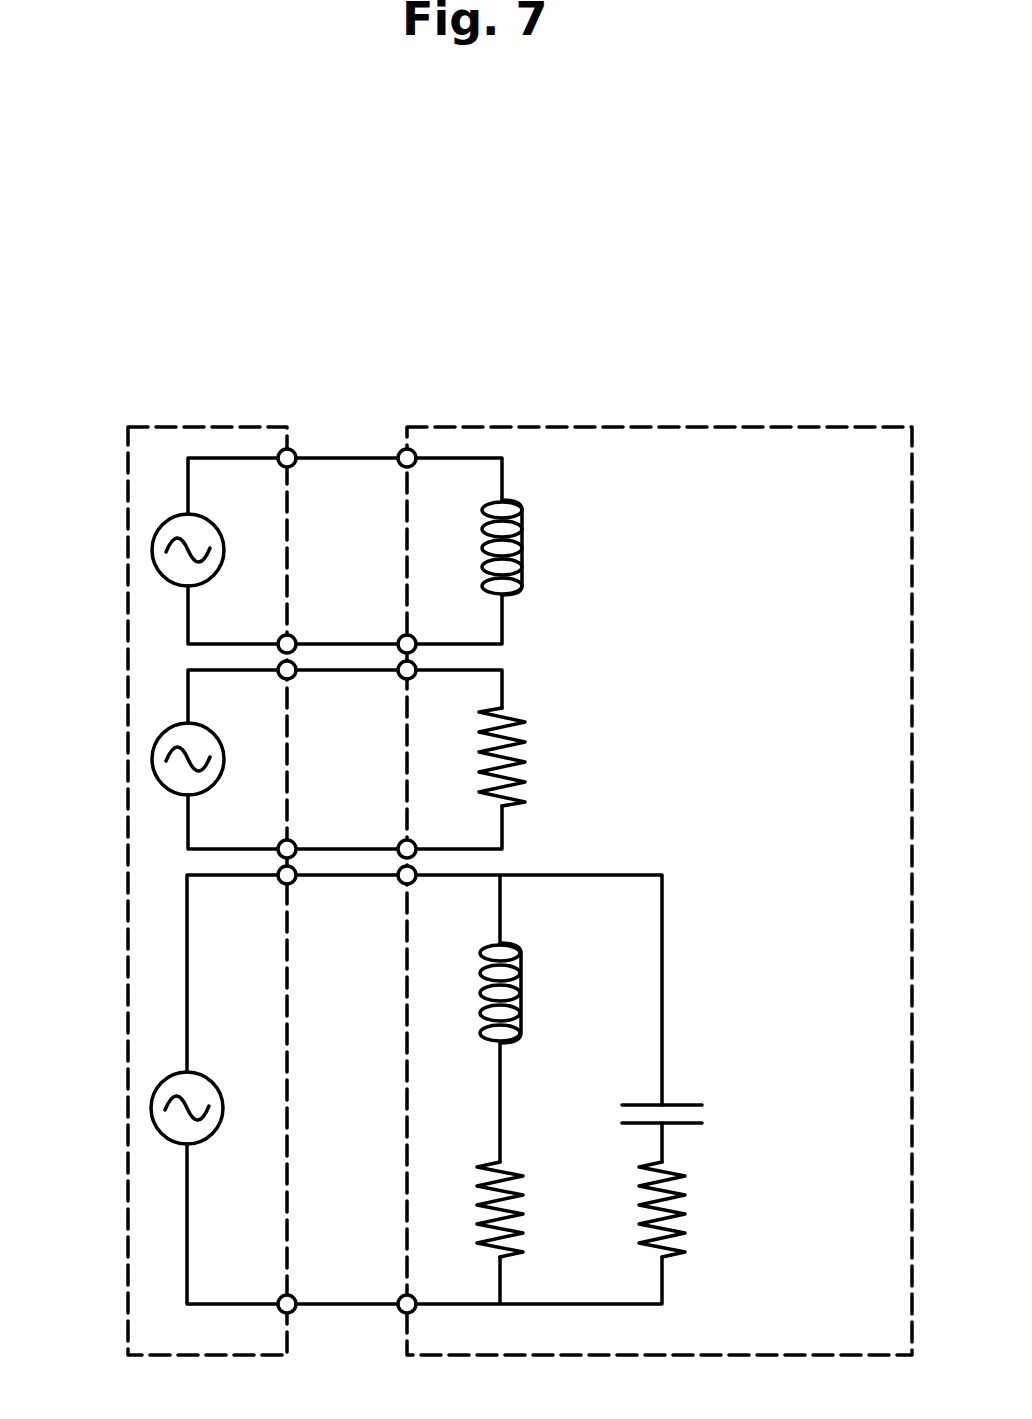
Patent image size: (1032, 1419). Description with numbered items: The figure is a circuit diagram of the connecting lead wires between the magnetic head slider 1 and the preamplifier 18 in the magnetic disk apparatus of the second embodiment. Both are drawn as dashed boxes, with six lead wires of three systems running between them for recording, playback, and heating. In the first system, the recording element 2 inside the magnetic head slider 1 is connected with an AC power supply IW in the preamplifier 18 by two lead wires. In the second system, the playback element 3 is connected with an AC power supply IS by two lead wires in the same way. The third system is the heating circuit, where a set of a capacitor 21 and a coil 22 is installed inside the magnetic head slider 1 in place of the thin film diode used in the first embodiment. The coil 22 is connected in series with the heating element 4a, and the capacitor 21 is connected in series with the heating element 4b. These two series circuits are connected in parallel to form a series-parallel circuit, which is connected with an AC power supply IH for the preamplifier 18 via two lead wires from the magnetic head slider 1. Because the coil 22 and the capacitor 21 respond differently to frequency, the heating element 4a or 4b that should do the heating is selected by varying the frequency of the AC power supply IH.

The magnetic head slider 1 is at (643, 427).
The preamplifier 18 is at (213, 427).
The recording element 2 is at (523, 522).
The playback element 3 is at (525, 742).
The coil 22 is at (522, 965).
The capacitor 21 is at (683, 1105).
The heating element 4a is at (520, 1192).
The heating element 4b is at (688, 1185).
The AC power supply IW is at (152, 552).
The AC power supply IS is at (152, 760).
The AC power supply IH is at (150, 1108).